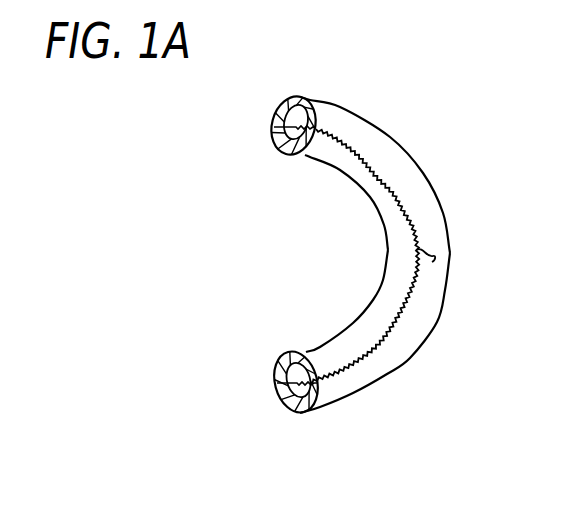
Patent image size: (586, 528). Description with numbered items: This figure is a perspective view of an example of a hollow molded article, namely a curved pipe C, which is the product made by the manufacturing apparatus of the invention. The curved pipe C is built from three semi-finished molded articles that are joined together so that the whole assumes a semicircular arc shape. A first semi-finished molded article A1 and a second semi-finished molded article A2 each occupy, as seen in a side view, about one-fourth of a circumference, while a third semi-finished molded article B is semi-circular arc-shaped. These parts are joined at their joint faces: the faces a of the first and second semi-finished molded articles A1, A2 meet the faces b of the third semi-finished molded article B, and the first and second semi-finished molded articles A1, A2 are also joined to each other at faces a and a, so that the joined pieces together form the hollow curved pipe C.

The first semi-finished molded article A1 is at (393, 134).
The second semi-finished molded article A2 is at (427, 345).
The joint face a is at (407, 200).
The third semi-finished molded article B is at (370, 203).
The joint face b is at (410, 228).
The curved pipe C is at (273, 246).